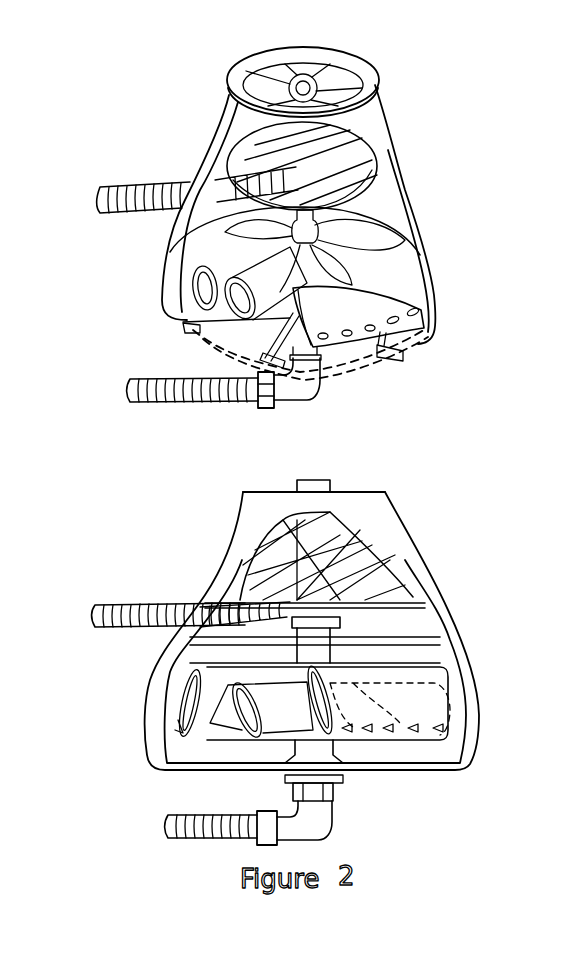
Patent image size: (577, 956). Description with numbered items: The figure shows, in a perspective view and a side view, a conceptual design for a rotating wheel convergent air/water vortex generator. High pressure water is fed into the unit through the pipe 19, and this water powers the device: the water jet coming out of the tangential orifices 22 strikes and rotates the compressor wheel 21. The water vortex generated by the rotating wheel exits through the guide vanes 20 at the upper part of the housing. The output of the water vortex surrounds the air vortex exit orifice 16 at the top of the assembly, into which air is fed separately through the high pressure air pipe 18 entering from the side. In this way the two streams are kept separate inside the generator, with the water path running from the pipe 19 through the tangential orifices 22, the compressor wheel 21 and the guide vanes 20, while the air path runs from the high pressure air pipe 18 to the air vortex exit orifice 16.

The air vortex exit orifice 16 is at (345, 78).
The high pressure air pipe 18 is at (138, 193).
The pipe 19 is at (148, 395).
The guide vanes 20 is at (340, 165).
The compressor wheel 21 is at (388, 238).
The tangential orifices 22 is at (412, 318).